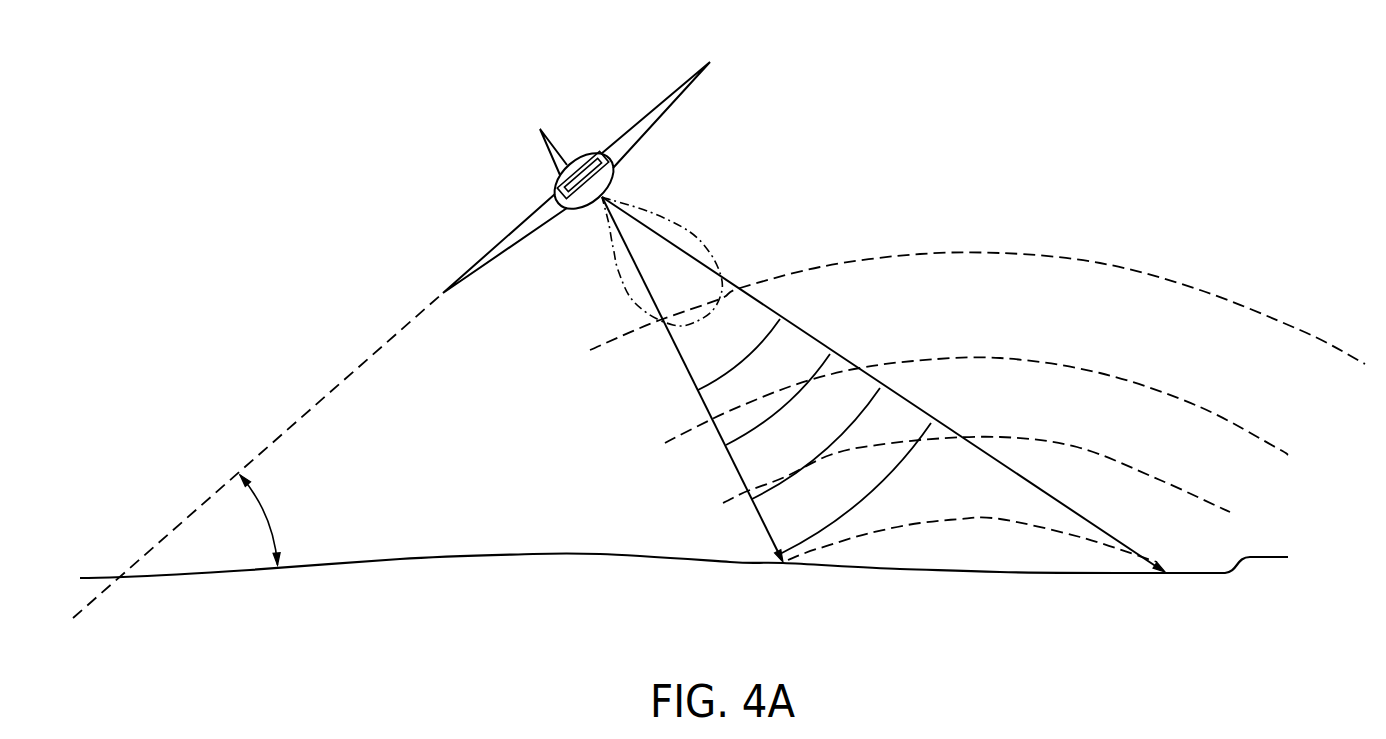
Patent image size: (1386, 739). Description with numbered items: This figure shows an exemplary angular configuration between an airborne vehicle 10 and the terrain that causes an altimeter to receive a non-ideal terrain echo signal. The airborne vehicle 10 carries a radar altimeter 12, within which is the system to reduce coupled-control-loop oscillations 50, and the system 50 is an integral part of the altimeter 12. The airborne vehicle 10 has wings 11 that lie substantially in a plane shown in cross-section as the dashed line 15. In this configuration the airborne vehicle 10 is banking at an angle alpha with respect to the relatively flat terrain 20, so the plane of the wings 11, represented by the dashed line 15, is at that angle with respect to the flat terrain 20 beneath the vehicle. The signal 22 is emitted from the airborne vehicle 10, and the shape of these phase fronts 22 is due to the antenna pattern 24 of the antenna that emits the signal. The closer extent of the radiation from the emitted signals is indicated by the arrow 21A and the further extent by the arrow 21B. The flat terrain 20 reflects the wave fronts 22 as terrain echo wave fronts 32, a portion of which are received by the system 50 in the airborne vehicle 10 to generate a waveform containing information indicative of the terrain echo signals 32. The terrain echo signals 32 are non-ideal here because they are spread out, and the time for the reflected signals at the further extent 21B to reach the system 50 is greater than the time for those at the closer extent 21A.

The airborne vehicle 10 is at (569, 252).
The wings 11 is at (670, 94).
The radar altimeter 12 is at (585, 152).
The system to reduce coupled-control-loop oscillations 50 is at (600, 172).
The antenna pattern 24 is at (699, 231).
The dashed line 15 is at (326, 396).
The flat terrain 20 is at (529, 553).
The arrows indicating closer extents of radiation 21A is at (767, 532).
The arrows indicating further extents of radiation 21B is at (1088, 520).
The phase fronts 22 is at (773, 336).
The terrain echo wave fronts 32 is at (1000, 252).